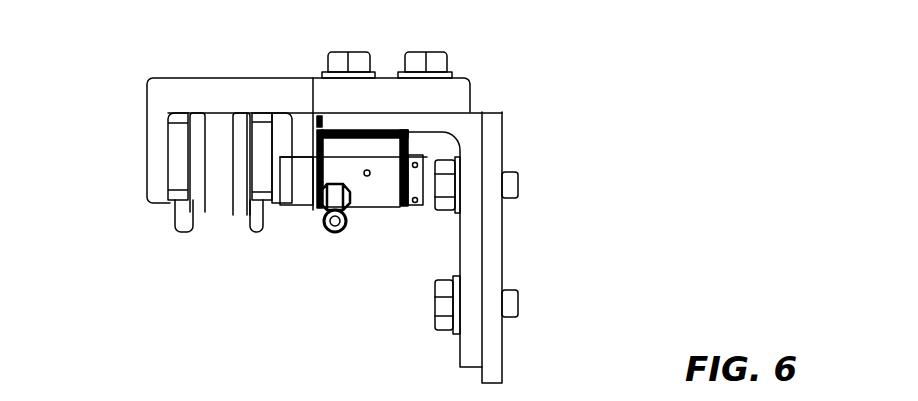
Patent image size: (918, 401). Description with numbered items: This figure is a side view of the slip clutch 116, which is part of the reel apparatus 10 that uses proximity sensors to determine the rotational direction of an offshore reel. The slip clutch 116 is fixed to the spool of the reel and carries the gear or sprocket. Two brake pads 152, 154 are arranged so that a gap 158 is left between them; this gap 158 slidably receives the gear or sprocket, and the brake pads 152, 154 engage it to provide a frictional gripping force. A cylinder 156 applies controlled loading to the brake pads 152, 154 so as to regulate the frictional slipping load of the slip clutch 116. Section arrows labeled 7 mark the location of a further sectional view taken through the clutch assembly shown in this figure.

The reel apparatus 10 is at (396, 212).
The slip clutch 116 is at (588, 176).
The brake pad 152 is at (257, 230).
The brake pad 154 is at (200, 207).
The cylinder 156 is at (387, 212).
The gap 158 is at (221, 207).
The section line arrows 7 is at (280, 198).